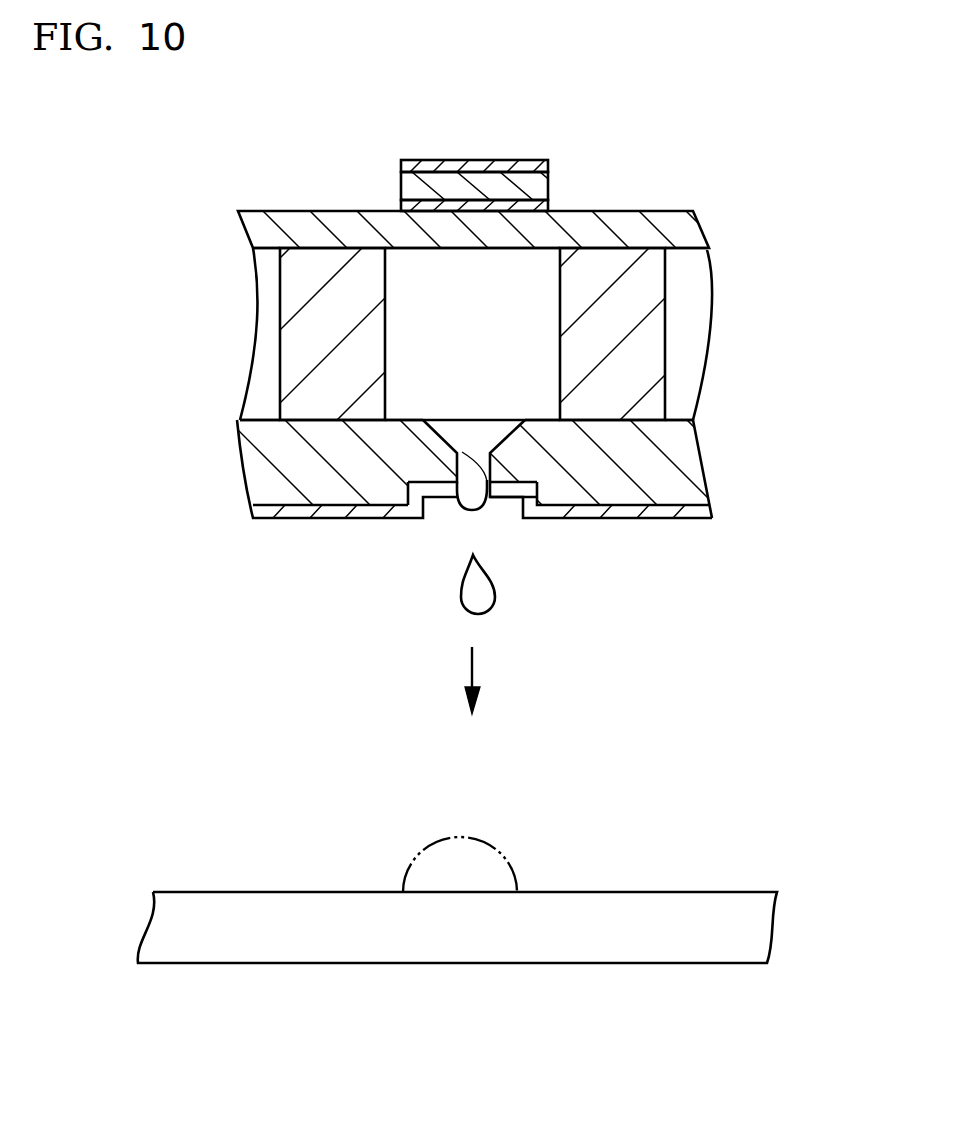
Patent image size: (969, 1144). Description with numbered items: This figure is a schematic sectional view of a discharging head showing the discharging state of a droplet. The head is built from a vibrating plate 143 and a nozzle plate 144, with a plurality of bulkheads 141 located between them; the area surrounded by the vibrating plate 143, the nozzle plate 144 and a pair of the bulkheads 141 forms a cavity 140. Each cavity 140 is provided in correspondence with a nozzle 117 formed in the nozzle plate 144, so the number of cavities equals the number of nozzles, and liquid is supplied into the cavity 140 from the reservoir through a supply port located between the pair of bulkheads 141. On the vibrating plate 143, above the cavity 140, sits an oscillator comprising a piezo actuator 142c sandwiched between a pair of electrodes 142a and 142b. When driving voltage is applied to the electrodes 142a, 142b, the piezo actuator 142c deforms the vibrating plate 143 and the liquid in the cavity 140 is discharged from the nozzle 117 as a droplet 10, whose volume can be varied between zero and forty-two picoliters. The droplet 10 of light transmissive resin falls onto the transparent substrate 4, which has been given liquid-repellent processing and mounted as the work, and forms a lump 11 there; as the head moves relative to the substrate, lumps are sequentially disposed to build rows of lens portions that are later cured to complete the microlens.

The transparent substrate 4 is at (762, 925).
The droplet 10 is at (480, 592).
The lump 11 is at (497, 847).
The nozzle 117 is at (475, 503).
The cavity 140 is at (540, 297).
The bulkhead 141 is at (292, 348).
The electrode 142a is at (422, 168).
The electrode 142b is at (412, 206).
The piezo actuator 142c is at (528, 190).
The vibrating plate 143 is at (263, 226).
The nozzle plate 144 is at (662, 471).